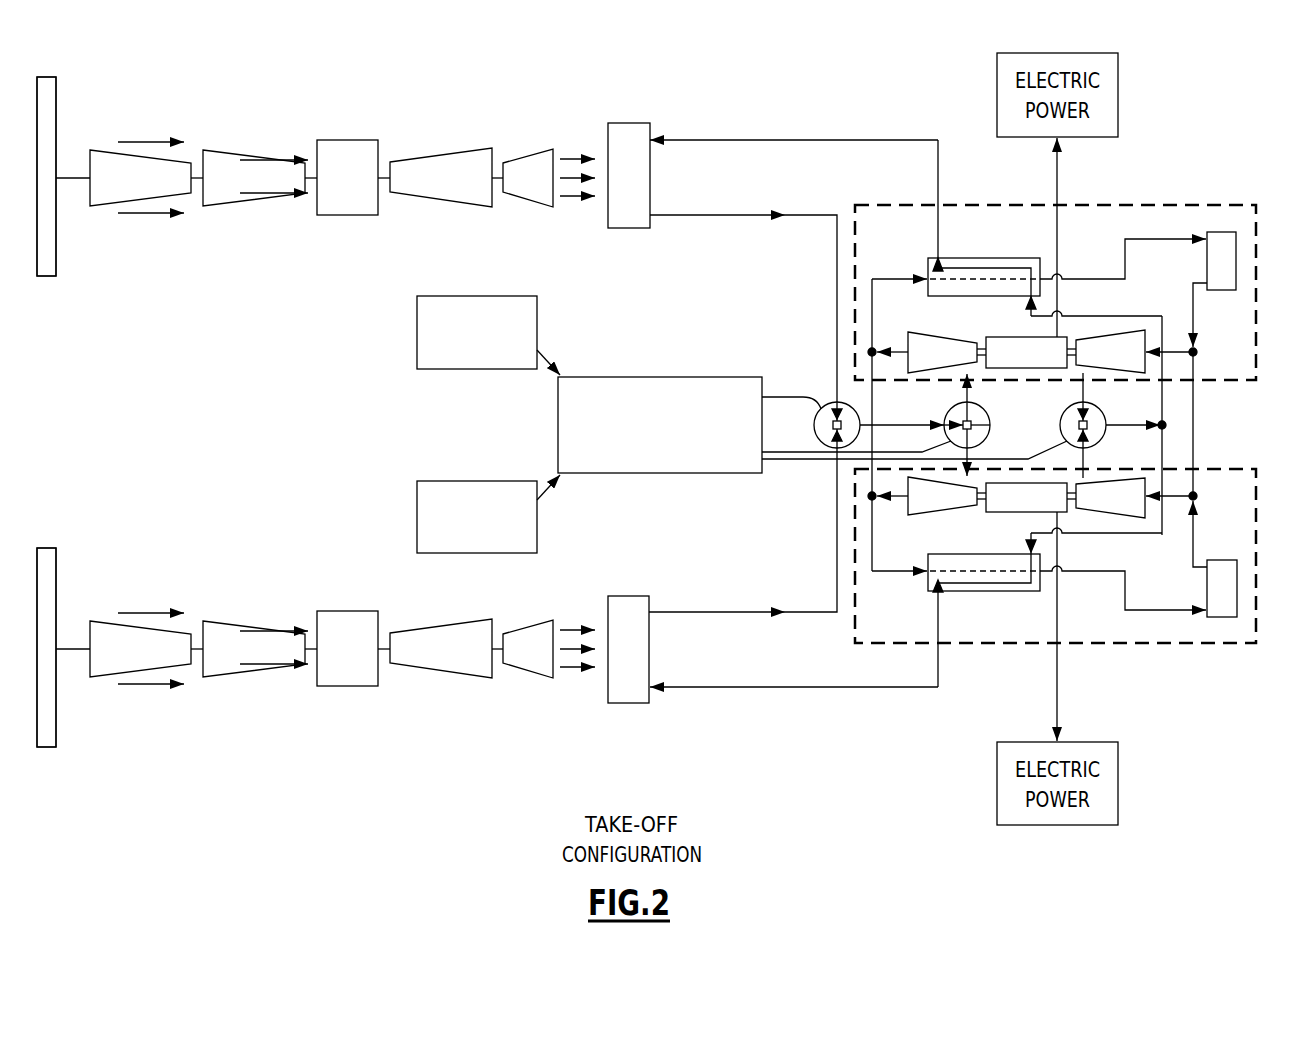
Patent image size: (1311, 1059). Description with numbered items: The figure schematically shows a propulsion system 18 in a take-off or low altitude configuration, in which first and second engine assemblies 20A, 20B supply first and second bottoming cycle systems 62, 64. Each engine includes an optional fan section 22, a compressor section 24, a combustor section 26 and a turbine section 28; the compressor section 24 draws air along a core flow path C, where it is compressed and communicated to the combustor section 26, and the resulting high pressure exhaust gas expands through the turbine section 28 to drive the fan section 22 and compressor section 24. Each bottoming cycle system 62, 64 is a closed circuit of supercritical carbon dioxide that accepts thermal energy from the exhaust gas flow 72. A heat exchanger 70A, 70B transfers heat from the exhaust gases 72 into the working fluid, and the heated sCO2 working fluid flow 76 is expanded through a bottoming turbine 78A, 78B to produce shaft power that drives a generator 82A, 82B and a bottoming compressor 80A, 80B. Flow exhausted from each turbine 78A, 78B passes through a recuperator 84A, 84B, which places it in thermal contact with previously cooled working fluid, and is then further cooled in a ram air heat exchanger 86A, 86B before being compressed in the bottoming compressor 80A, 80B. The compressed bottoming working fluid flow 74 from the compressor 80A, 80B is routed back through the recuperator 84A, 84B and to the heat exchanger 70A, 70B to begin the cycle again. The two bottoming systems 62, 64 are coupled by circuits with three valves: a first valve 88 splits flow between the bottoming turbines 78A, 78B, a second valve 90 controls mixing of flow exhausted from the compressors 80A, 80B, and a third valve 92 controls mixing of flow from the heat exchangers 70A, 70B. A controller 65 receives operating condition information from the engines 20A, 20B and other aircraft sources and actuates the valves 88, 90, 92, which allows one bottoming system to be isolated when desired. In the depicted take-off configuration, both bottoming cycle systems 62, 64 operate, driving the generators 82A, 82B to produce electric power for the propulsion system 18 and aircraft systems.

The propulsion system 18 is at (850, 73).
The first engine assembly 20A is at (296, 67).
The second engine assembly 20B is at (296, 539).
The fan section 22 is at (90, 293).
The compressor section 24 is at (305, 232).
The combustor section 26 is at (382, 232).
The turbine section 28 is at (556, 232).
The core flow path C is at (299, 157).
The first bottoming cycle system 62 is at (1137, 205).
The second bottoming cycle system 64 is at (1165, 643).
The controller 65 is at (683, 377).
The heat exchanger 70A is at (632, 228).
The heat exchanger 70B is at (632, 596).
The exhaust gas flow 72 is at (583, 140).
The compressed bottoming working fluid flow 74 is at (735, 215).
The heated sCO2 working fluid flow 76 is at (762, 140).
The bottoming turbine 78A is at (928, 345).
The bottoming turbine 78B is at (928, 508).
The bottoming compressor 80A is at (1113, 350).
The bottoming compressor 80B is at (1113, 500).
The generator 82A is at (1010, 345).
The generator 82B is at (1010, 508).
The recuperator 84A is at (978, 258).
The recuperator 84B is at (970, 592).
The ram air heat exchanger 86A is at (1236, 262).
The ram air heat exchanger 86B is at (1237, 590).
The first valve 88 is at (990, 423).
The second valve 90 is at (1105, 412).
The third valve 92 is at (832, 402).